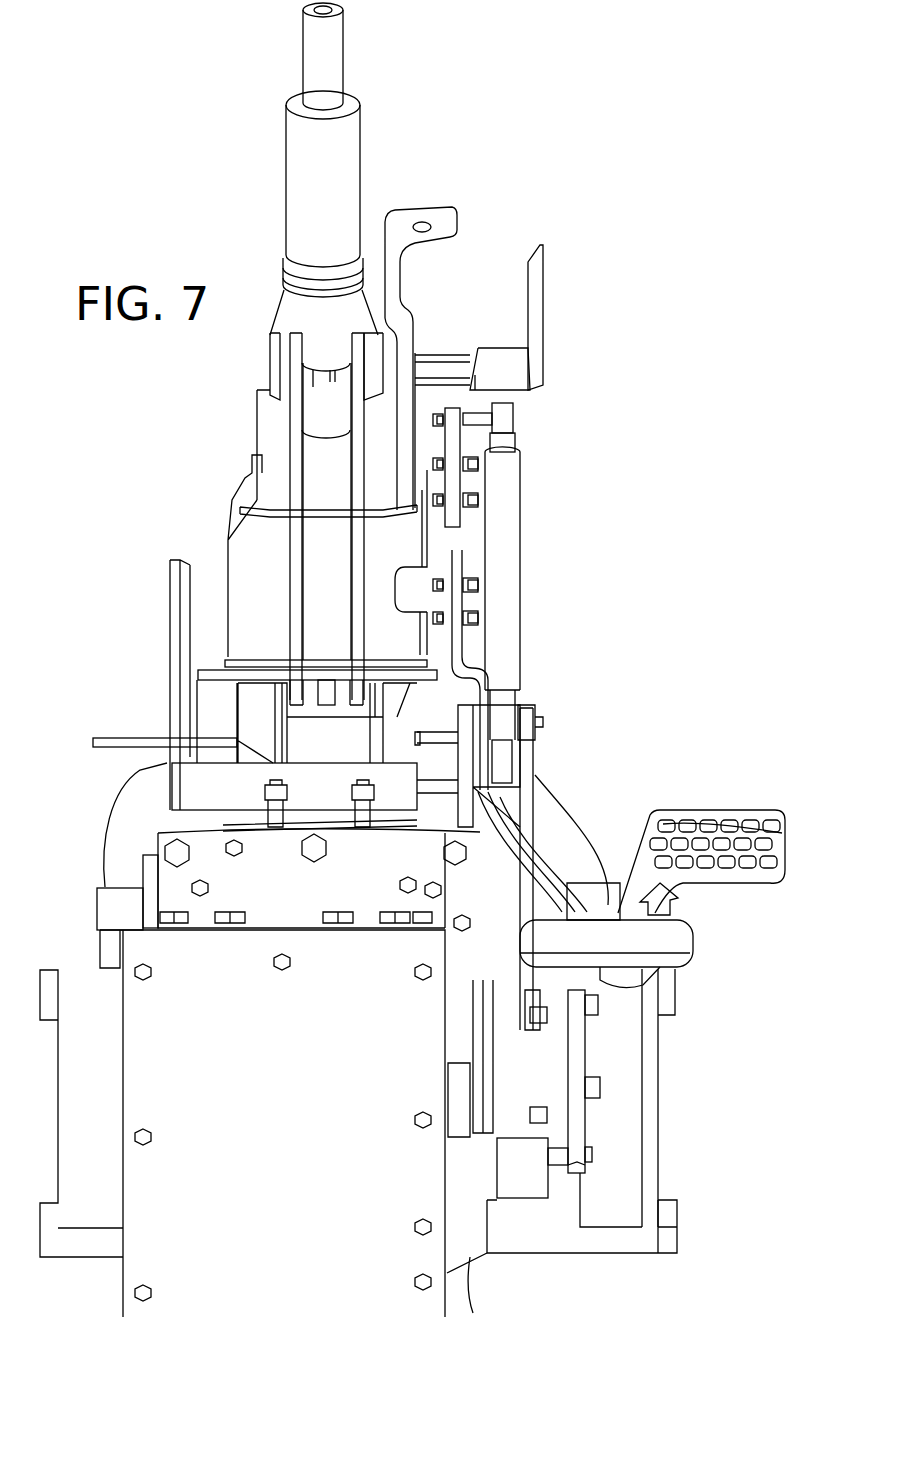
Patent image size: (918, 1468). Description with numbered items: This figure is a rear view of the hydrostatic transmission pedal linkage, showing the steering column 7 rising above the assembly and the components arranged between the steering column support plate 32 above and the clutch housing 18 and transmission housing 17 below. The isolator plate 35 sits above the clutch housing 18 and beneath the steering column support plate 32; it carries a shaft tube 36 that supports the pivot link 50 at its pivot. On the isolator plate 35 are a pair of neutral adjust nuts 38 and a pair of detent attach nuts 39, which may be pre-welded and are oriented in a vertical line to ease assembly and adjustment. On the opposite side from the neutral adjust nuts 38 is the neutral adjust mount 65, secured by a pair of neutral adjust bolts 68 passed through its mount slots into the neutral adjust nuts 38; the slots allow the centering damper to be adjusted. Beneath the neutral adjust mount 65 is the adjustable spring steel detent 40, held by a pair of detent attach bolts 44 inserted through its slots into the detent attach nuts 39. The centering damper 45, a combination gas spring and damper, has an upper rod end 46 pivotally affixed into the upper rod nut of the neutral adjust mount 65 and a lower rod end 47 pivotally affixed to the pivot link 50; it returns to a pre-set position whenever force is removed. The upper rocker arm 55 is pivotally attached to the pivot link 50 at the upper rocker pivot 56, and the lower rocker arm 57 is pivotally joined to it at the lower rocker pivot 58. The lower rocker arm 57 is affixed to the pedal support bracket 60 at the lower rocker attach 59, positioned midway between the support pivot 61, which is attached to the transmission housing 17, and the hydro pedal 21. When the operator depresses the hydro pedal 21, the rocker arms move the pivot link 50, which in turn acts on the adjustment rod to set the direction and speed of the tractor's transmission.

The hydraulic cylinder 7 is at (370, 127).
The transmission housing 17 is at (143, 1063).
The clutch housing 18 is at (200, 888).
The hydro pedal 21 is at (782, 862).
The steering column support plate 32 is at (245, 533).
The isolator plate 35 is at (240, 670).
The shaft tube 36 is at (200, 792).
The neutral adjust nuts 38 is at (440, 498).
The detent attach nuts 39 is at (437, 615).
The adjustable spring steel detent 40 is at (480, 688).
The detent attach bolts 44 is at (478, 618).
The centering damper 45 is at (520, 565).
The upper rod end 46 is at (505, 420).
The lower rod end 47 is at (505, 758).
The pivot link 50 is at (518, 707).
The upper rocker arm 55 is at (527, 787).
The upper rocker pivot 56 is at (540, 720).
The lower rocker arm 57 is at (527, 1052).
The lower rocker pivot 58 is at (543, 1012).
The lower rocker attach 59 is at (587, 1103).
The pedal support bracket 60 is at (577, 1162).
The support pivot 61 is at (590, 1153).
The neutral adjust mount 65 is at (457, 412).
The neutral adjust bolts 68 is at (478, 500).